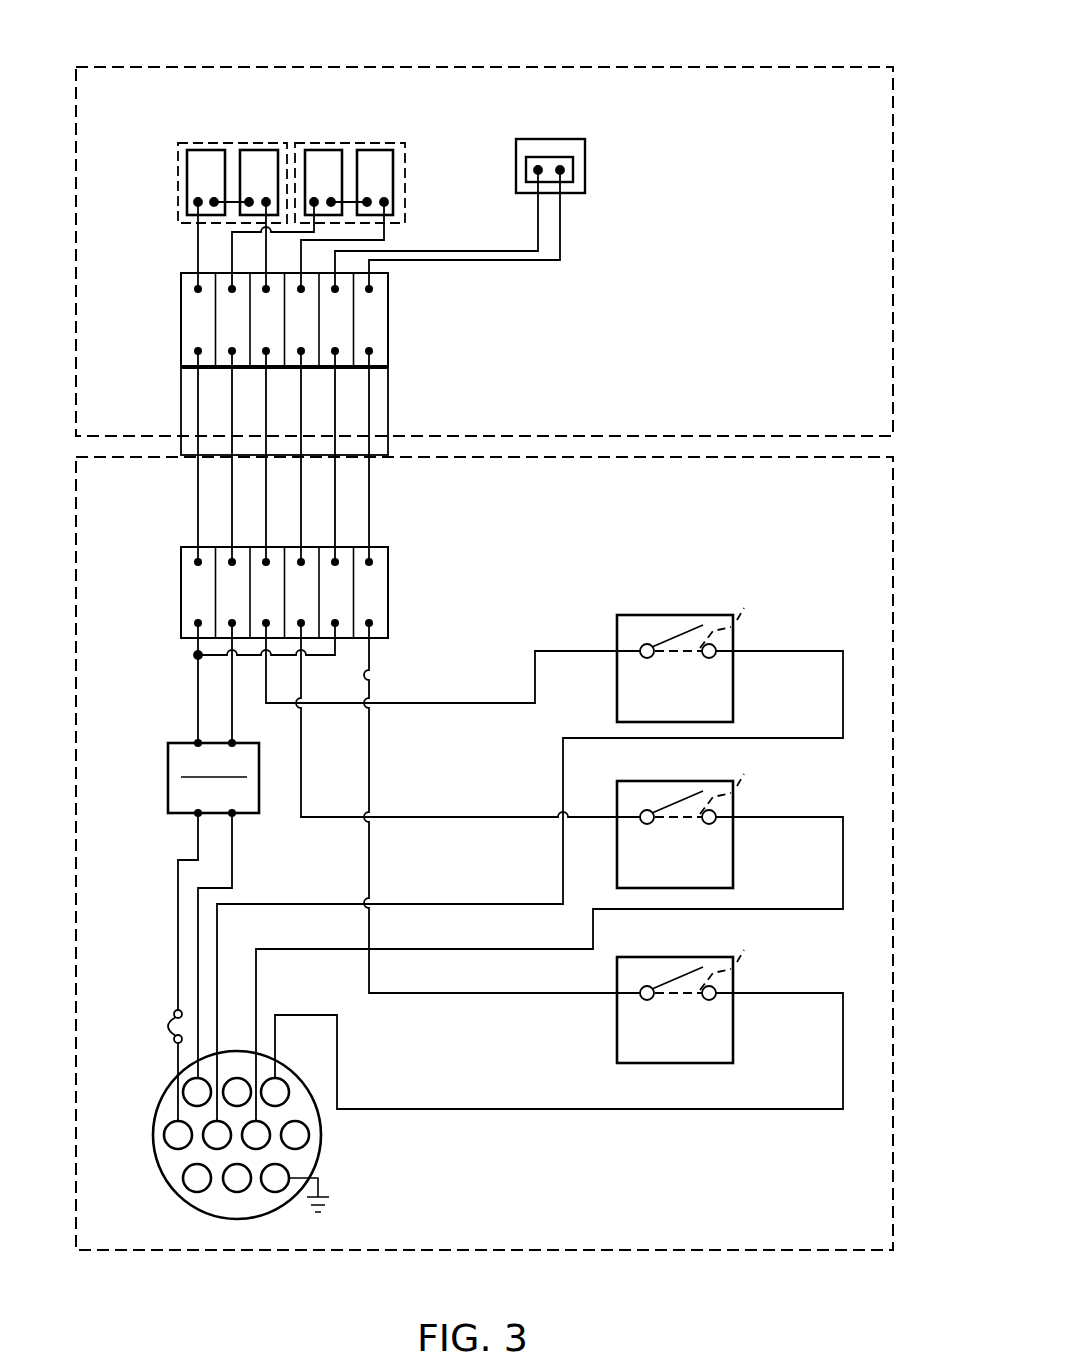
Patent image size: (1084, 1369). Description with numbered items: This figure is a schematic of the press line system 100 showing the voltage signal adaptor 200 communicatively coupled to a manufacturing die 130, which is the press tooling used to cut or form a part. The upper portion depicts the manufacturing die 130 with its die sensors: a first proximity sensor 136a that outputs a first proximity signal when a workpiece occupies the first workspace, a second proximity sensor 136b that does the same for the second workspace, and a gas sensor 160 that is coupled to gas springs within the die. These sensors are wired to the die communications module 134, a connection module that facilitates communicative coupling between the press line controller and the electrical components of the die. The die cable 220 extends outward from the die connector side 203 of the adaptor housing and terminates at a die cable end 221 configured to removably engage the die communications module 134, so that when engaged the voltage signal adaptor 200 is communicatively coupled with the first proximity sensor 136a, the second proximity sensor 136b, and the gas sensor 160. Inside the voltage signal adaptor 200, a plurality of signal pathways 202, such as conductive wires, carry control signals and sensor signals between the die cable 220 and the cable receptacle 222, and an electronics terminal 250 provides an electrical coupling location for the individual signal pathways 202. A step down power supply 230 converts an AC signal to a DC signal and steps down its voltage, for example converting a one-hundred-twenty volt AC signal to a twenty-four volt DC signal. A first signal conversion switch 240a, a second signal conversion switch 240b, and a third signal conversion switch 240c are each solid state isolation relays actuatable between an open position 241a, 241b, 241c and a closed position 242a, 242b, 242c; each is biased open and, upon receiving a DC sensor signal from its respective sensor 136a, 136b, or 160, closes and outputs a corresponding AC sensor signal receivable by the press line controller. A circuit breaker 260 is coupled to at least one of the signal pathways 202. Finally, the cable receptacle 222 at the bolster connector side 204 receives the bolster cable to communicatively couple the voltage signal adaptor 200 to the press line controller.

The press line system 100 is at (834, 43).
The manufacturing die 130 is at (808, 120).
The voltage signal adaptor 200 is at (808, 508).
The first proximity sensor 136a is at (232, 140).
The second proximity sensor 136b is at (350, 140).
The gas sensor 160 is at (585, 165).
The die communications module 134 is at (388, 318).
The die cable end 221 is at (355, 369).
The die cable 220 is at (388, 430).
The die connector side 203 is at (734, 450).
The electronics terminal 250 is at (388, 555).
The signal pathways 202 is at (446, 652).
The step down power supply 230 is at (168, 760).
The first signal conversion switch 240a is at (721, 649).
The second signal conversion switch 240b is at (721, 815).
The third signal conversion switch 240c is at (720, 991).
The open position 241a is at (683, 632).
The open position 241b is at (683, 798).
The open position 241c is at (683, 974).
The closed position 242a is at (718, 614).
The closed position 242b is at (718, 780).
The closed position 242c is at (717, 956).
The circuit breaker 260 is at (163, 1027).
The cable receptacle 222 is at (161, 1171).
The bolster connector side 204 is at (666, 1260).